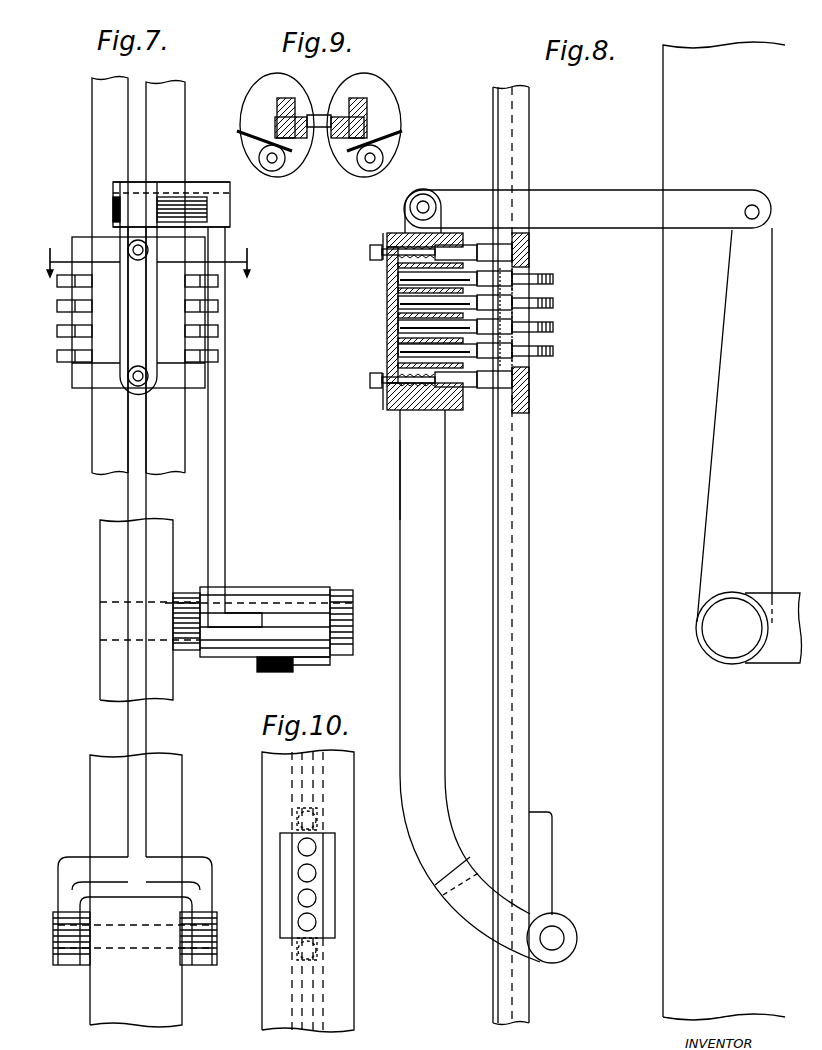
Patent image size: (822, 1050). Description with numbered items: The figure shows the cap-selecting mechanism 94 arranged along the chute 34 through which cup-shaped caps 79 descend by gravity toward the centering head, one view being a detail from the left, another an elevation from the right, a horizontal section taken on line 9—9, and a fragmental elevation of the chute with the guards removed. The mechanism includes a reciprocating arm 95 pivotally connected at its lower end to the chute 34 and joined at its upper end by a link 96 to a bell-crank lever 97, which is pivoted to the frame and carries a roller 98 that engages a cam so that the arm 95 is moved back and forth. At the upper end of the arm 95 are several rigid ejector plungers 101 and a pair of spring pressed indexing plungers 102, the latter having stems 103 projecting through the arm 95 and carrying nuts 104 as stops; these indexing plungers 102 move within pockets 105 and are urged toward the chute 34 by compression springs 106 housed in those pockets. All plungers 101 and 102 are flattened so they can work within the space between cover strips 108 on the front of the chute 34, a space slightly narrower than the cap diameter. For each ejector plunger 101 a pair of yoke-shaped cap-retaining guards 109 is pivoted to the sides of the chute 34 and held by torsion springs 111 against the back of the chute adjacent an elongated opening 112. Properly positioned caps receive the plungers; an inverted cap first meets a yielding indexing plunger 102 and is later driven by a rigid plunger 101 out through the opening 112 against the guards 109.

In FIG. 7, the section line 9— 9 is at (149, 262).
In FIG. 8, the chute 34 is at (522, 624).
In FIG. 8, the cup-shaped caps 79 is at (531, 243).
In FIG. 8, the cap-selecting mechanism 94 is at (399, 476).
In FIG. 7, the reciprocating arm 95 is at (140, 742).
In FIG. 8, the reciprocating arm 95 is at (407, 543).
In FIG. 8, the link 96 is at (595, 200).
In FIG. 7, the bell-crank lever 97 is at (222, 560).
In FIG. 8, the bell-crank lever 97 is at (780, 657).
In FIG. 7, the roller 98 is at (262, 670).
In FIG. 8, the rigid ejector plungers 101 is at (400, 345).
In FIG. 10, the rigid ejector plungers 101 is at (316, 922).
In FIG. 8, the spring pressed indexing plungers 102 is at (460, 248).
In FIG. 7, the stems 103 is at (128, 245).
In FIG. 8, the stems 103 is at (383, 245).
In FIG. 7, the nuts 104 is at (128, 378).
In FIG. 8, the nuts 104 is at (370, 250).
In FIG. 8, the pockets 105 is at (405, 198).
In FIG. 8, the compression springs 106 is at (393, 265).
In FIG. 7, the cover strips 108 is at (159, 92).
In FIG. 7, the yoke-shaped cap-retaining guards 109 is at (60, 332).
In FIG. 9, the yoke-shaped cap-retaining guards 109 is at (300, 95).
In FIG. 8, the yoke-shaped cap-retaining guards 109 is at (553, 305).
In FIG. 9, the torsion springs 111 is at (237, 142).
In FIG. 9, the elongated opening 112 is at (345, 98).
In FIG. 8, the elongated opening 112 is at (524, 344).
In FIG. 10, the elongated opening 112 is at (280, 874).